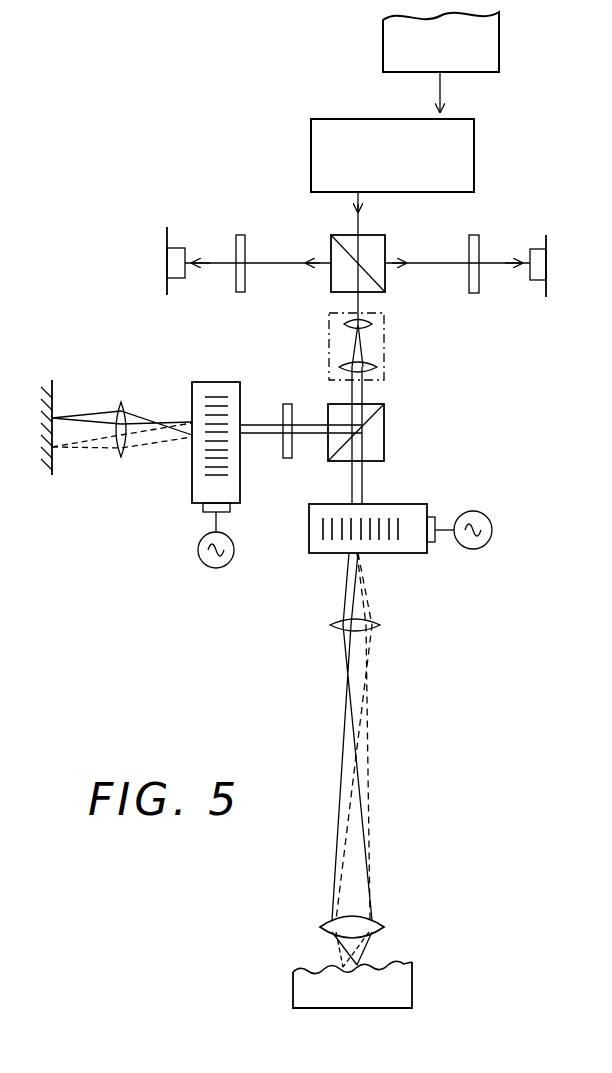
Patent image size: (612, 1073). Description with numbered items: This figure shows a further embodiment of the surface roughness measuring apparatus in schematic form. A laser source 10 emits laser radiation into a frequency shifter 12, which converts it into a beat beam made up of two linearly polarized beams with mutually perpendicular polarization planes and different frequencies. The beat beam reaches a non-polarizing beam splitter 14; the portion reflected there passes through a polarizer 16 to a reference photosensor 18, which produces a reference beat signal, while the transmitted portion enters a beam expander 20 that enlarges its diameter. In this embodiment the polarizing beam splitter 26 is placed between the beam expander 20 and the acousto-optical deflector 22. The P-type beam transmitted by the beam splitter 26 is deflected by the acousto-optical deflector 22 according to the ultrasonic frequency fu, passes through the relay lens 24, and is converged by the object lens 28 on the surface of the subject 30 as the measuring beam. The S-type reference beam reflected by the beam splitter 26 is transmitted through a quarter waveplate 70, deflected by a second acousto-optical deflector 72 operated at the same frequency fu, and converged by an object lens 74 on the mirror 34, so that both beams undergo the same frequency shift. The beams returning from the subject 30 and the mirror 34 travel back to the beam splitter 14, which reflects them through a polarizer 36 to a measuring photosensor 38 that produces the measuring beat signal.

The laser source 10 is at (489, 55).
The frequency shifter 12 is at (465, 162).
The non-polarizing beam splitter 14 is at (370, 240).
The polarizer 16 is at (473, 292).
The reference photosensor 18 is at (538, 282).
The beam expander 20 is at (330, 328).
The acousto-optical deflector 22 is at (411, 568).
The relay lens 24 is at (340, 630).
The polarizing beam splitter 26 is at (375, 443).
The object lens 28 is at (375, 922).
The subject 30 is at (398, 992).
The mirror 34 is at (66, 458).
The polarizer 36 is at (242, 234).
The measuring photosensor 38 is at (178, 248).
The quarter waveplate 70 is at (288, 460).
The acousto-optical deflector 72 is at (178, 474).
The object lens 74 is at (118, 412).